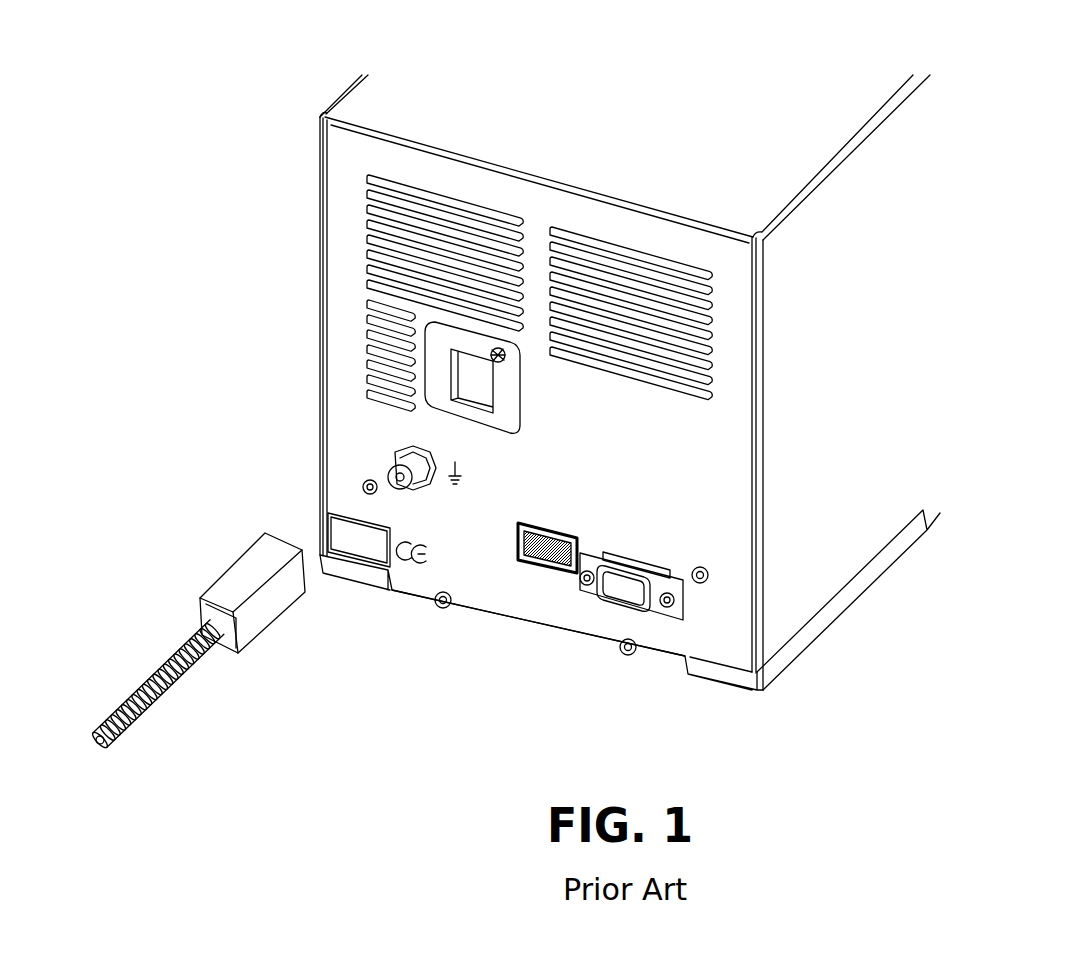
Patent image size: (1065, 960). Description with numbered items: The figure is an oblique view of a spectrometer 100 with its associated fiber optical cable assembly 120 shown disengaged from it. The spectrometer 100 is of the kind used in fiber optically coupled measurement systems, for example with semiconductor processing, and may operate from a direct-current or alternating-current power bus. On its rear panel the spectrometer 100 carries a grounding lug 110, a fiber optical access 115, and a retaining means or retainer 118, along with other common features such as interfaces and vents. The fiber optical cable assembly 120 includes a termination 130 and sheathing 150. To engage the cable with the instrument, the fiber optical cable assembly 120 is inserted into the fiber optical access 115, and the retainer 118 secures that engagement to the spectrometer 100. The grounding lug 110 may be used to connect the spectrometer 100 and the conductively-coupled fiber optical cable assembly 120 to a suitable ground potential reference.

The spectrometer 100 is at (288, 277).
The grounding lug 110 is at (393, 473).
The fiber optical access 115 is at (442, 372).
The retainer 118 is at (505, 350).
The fiber optical cable assembly 120 is at (236, 693).
The termination 130 is at (277, 605).
The sheathing 150 is at (135, 693).